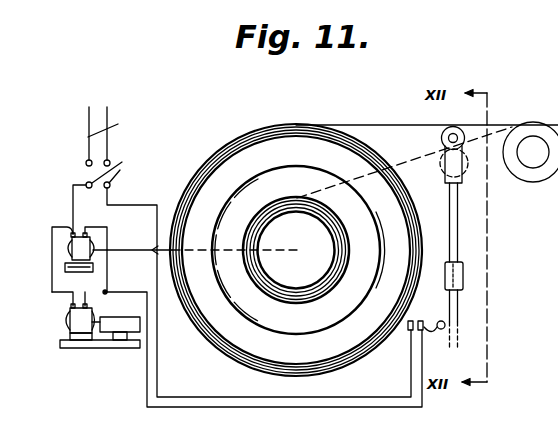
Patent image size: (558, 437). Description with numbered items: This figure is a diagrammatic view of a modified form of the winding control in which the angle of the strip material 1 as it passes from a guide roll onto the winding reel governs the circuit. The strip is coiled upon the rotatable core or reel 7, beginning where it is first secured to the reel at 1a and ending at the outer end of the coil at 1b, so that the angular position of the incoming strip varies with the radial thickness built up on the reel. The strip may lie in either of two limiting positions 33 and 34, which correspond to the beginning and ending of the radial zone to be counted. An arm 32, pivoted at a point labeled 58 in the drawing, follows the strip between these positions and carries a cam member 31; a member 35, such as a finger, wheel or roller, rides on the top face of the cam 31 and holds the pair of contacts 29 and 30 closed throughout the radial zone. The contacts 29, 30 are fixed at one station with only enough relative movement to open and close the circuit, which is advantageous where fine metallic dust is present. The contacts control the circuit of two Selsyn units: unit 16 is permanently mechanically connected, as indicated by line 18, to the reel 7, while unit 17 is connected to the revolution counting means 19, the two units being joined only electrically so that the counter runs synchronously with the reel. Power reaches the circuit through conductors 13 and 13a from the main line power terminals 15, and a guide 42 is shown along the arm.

The strip material 1 is at (497, 124).
The beginning of the strip 1a is at (312, 216).
The end of the coiled strip 1b is at (310, 124).
The rotatable core or reel 7 is at (299, 280).
The conductor 13 is at (73, 206).
The conductor 13a is at (138, 205).
The main line power terminals 15 is at (114, 147).
The Selsyn unit 16 is at (95, 268).
The Selsyn unit 17 is at (64, 321).
The line 18 is at (145, 249).
The revolution counting means 19 is at (116, 312).
The contact 29 is at (408, 331).
The contact 30 is at (426, 332).
The cam member 31 is at (446, 309).
The arm 32 is at (486, 222).
The limiting position of the strip 33 is at (441, 172).
The position of the strip 34 is at (418, 125).
The member 35 is at (483, 338).
The guide 42 is at (462, 273).
The pivot 58 is at (441, 138).